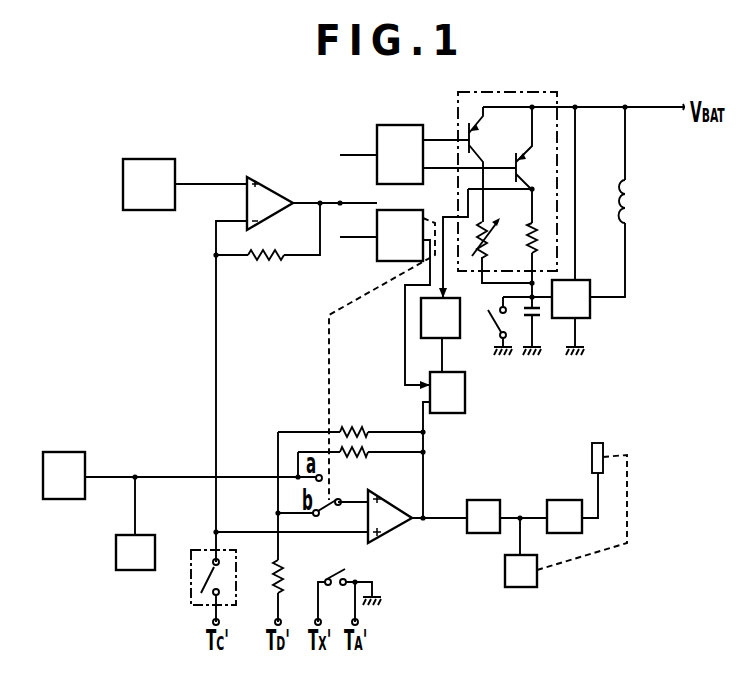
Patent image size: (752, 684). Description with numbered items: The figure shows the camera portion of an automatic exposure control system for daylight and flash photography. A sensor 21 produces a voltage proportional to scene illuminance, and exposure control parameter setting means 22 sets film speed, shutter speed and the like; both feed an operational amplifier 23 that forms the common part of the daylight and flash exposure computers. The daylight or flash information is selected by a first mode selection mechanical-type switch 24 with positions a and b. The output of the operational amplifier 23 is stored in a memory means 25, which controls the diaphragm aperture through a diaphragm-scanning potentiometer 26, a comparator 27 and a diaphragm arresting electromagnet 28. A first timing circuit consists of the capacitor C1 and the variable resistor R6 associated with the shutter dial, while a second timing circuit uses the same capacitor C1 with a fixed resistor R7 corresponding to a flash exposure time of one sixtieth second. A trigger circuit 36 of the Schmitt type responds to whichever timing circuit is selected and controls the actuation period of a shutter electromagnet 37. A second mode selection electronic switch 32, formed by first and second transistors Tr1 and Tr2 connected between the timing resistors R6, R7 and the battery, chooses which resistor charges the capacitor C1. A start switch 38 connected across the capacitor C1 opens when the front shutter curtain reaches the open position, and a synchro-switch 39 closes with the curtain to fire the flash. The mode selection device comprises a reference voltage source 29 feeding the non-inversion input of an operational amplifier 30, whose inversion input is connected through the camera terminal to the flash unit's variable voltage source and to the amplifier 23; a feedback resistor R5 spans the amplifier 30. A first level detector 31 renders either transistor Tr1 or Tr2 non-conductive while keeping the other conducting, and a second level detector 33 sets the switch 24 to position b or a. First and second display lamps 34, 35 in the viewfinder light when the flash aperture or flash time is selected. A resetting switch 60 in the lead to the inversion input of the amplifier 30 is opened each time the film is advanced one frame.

The sensor 21 is at (64, 475).
The exposure control parameter setting means 22 is at (135, 553).
The operational amplifier 23 is at (390, 516).
The first mode selection mechanical-type switch 24 is at (330, 500).
The memory means 25 is at (483, 517).
The diaphragm-scanning potentiometer 26 is at (521, 571).
The comparator 27 is at (564, 517).
The diaphragm arresting electromagnet 28 is at (603, 450).
The reference voltage source 29 is at (149, 184).
The operational amplifier 30 is at (270, 203).
The first level detector 31 is at (400, 154).
The second mode selection electronic switch 32 is at (513, 92).
The second level detector 33 is at (400, 235).
The first display lamp 34 is at (447, 392).
The second display lamp 35 is at (440, 318).
The trigger circuit 36 is at (571, 299).
The shutter electromagnet 37 is at (632, 207).
The start switch 38 is at (485, 325).
The synchro-switch 39 is at (342, 567).
The resetting switch 60 is at (193, 565).
The feedback resistor R5 is at (266, 270).
The variable resistor R6 is at (489, 225).
The fixed resistor R7 is at (521, 242).
The first transistor Tr1 is at (490, 164).
The second transistor Tr2 is at (538, 165).
The capacitor C1 is at (540, 327).